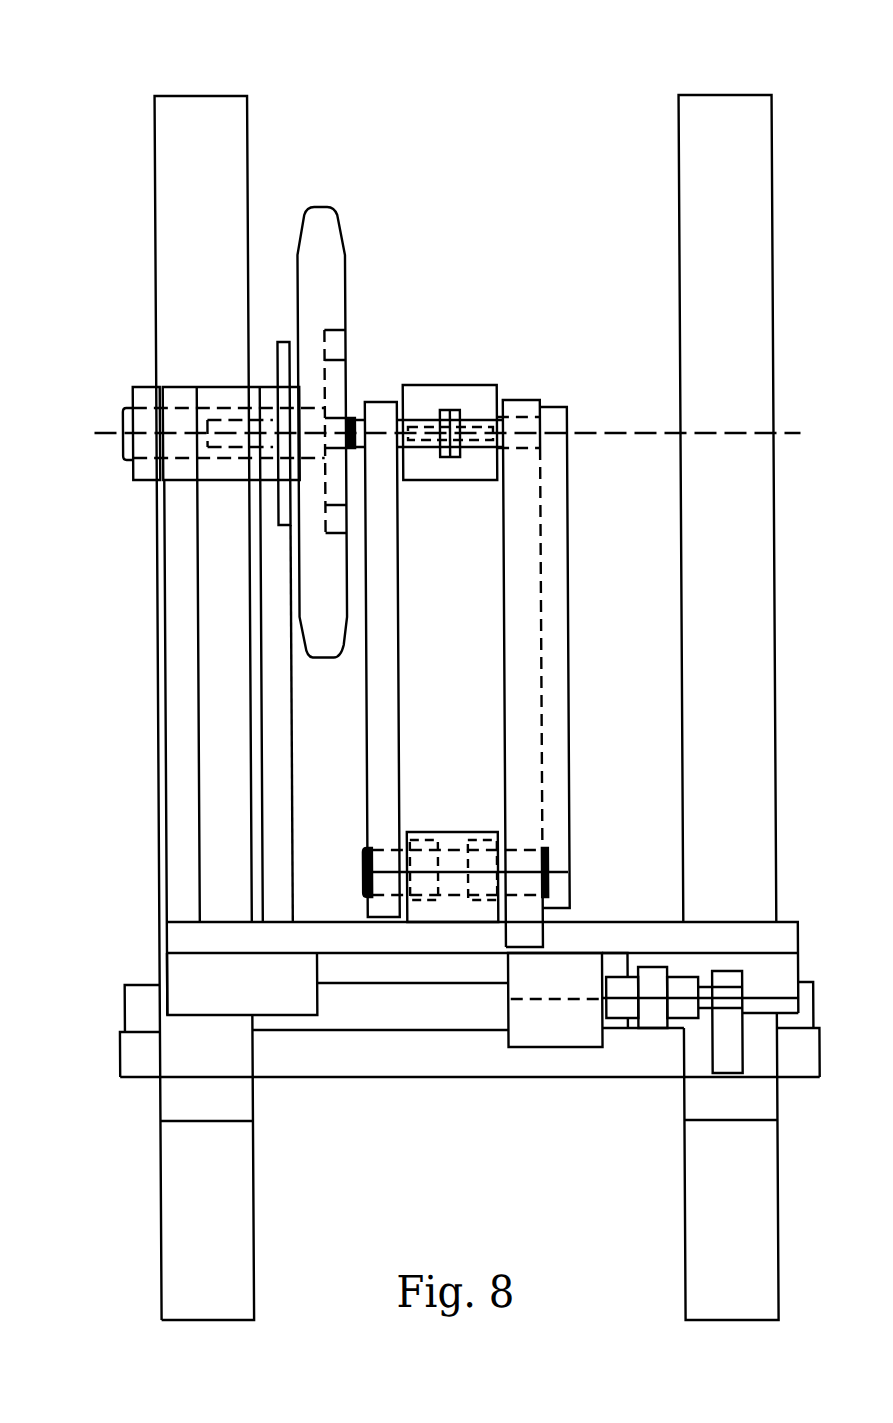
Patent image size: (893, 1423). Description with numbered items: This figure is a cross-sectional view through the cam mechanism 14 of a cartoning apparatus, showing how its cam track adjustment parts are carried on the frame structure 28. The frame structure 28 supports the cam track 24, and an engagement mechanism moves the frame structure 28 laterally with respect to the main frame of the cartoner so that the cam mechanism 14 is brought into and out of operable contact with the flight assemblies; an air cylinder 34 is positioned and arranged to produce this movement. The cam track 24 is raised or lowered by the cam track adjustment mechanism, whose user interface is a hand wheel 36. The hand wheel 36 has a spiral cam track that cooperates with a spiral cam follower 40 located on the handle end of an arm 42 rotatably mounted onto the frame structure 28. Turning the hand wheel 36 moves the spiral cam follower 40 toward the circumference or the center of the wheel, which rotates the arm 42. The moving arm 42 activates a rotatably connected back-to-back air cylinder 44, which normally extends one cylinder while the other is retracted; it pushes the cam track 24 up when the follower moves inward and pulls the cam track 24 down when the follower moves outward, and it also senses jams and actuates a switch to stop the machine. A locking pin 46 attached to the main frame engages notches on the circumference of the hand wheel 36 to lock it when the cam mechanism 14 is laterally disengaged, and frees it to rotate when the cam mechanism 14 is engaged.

The cam mechanism 14 is at (144, 78).
The cam track 24 is at (565, 424).
The frame structure 28 is at (67, 1086).
The air cylinder 34 is at (577, 1048).
The hand wheel 36 is at (343, 237).
The spiral cam follower 40 is at (332, 410).
The arm 42 is at (378, 402).
The back-to-back air cylinder 44 is at (476, 385).
The locking pin 46 is at (229, 416).